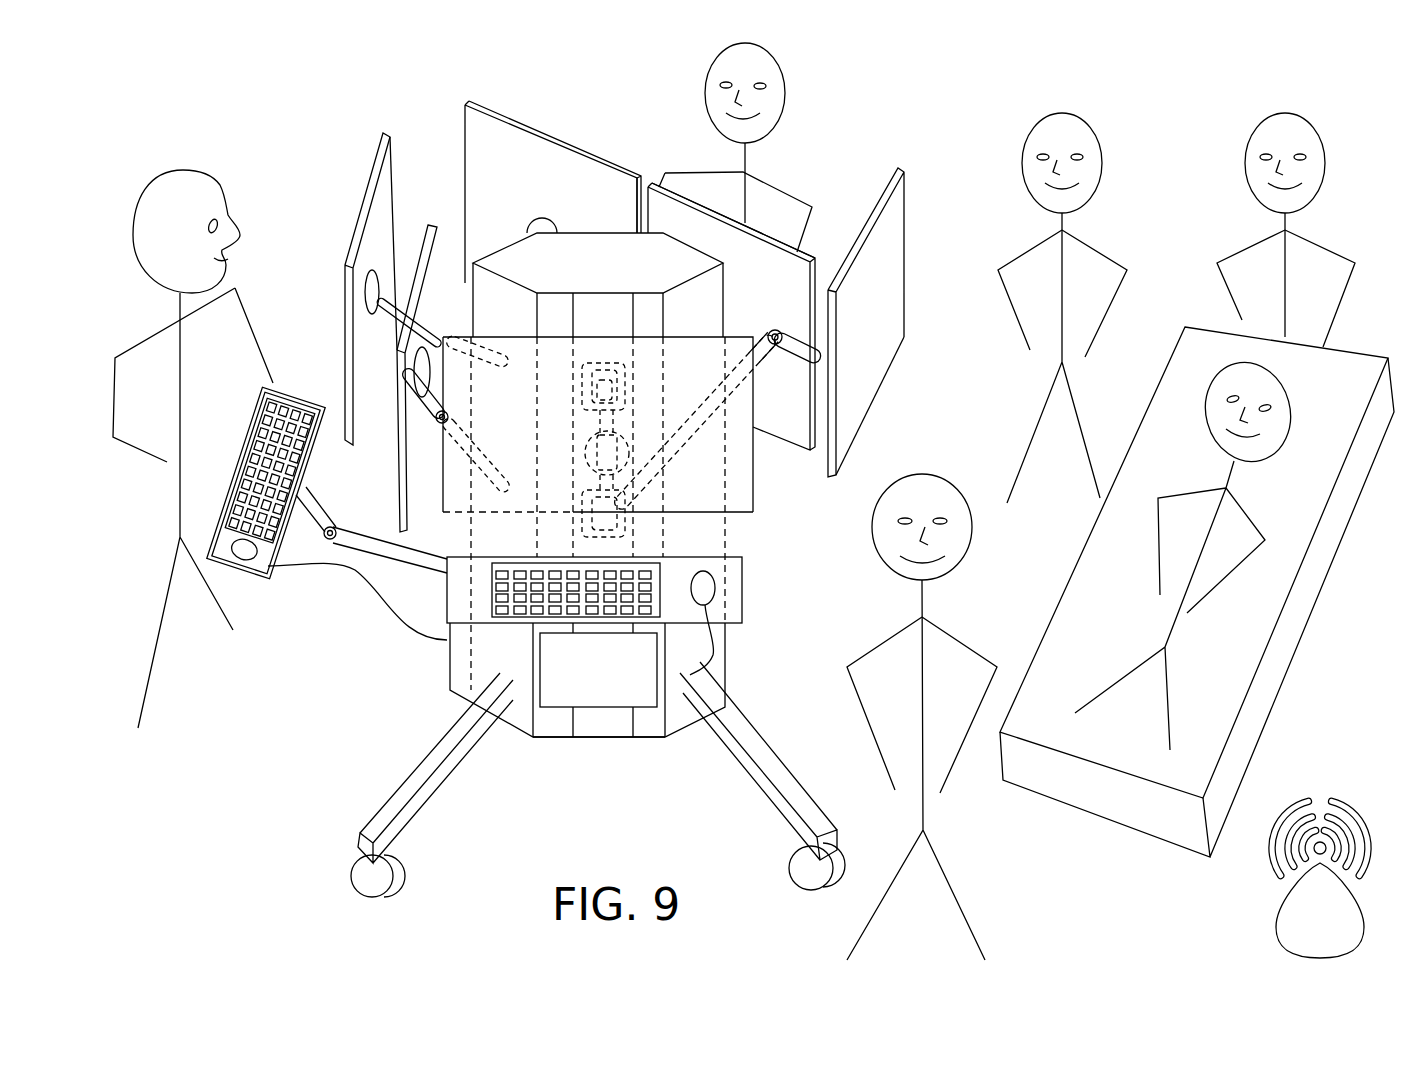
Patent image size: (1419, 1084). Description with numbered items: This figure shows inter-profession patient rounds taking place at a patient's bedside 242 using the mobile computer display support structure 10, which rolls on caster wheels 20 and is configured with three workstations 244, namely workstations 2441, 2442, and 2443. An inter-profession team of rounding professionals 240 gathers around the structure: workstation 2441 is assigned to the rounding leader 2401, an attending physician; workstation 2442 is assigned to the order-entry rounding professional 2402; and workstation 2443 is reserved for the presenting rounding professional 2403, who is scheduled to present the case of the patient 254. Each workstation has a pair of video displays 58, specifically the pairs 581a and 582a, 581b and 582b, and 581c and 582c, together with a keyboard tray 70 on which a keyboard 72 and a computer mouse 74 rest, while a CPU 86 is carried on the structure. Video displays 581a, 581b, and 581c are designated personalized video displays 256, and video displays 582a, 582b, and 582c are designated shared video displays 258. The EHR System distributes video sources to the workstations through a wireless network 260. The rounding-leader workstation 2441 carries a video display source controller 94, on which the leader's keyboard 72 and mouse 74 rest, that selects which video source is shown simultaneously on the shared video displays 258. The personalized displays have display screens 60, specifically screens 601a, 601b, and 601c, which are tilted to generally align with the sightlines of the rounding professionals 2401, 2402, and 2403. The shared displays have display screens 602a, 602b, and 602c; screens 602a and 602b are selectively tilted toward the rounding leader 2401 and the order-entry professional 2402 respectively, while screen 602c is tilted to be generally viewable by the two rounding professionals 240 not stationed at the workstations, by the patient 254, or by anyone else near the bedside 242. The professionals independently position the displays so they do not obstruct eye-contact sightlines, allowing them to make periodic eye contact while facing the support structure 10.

The computer display support structure 10 is at (522, 475).
The caster wheel 20 is at (408, 869).
The video display 58 is at (651, 372).
The video display 581a is at (390, 150).
The video display 581b is at (803, 294).
The video display 581c is at (504, 337).
The video display 582a is at (433, 223).
The video display 582b is at (463, 103).
The video display 582c is at (880, 388).
The display screen 60 is at (600, 327).
The display screen 601a is at (360, 207).
The display screen 601b is at (767, 237).
The display screen 601c is at (753, 463).
The display screen 602a is at (392, 493).
The display screen 602b is at (568, 148).
The display screen 602c is at (895, 339).
The keyboard tray 70 is at (263, 577).
The keyboard 72 is at (267, 422).
The computer mouse 74 is at (236, 563).
The CPU 86 is at (450, 653).
The video display source controller 94 is at (217, 531).
The rounding professionals 240 is at (734, 501).
The rounding leader 2401 is at (157, 175).
The order-entry rounding professional 2402 is at (783, 80).
The presenting rounding professional 2403 is at (895, 717).
The patient's bedside 242 is at (1189, 592).
The workstations 244 is at (552, 703).
The workstation 2441 is at (348, 577).
The workstation 2442 is at (792, 657).
The workstation 2443 is at (567, 757).
The patient 254 is at (1210, 405).
The personalized video displays 256 is at (377, 235).
The shared video displays 258 is at (612, 185).
The wireless network 260 is at (1341, 929).